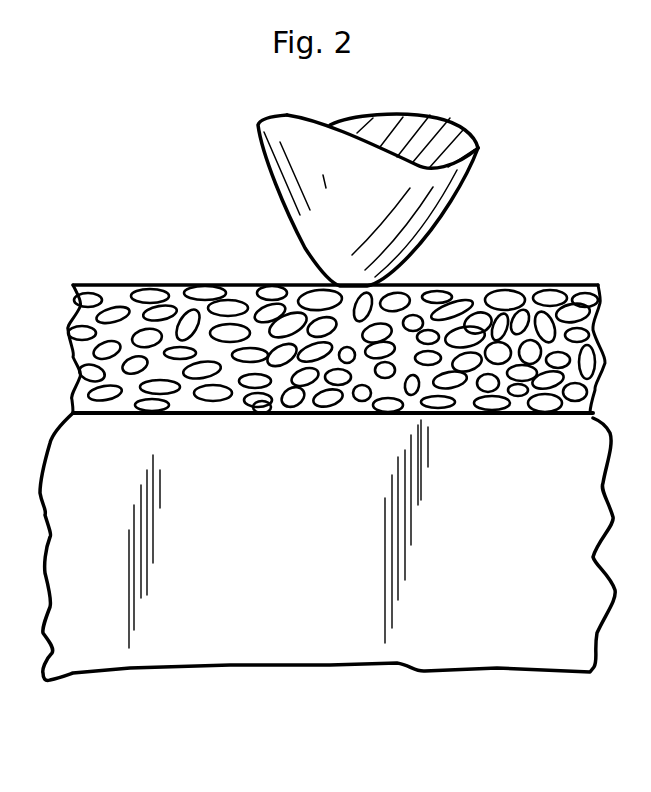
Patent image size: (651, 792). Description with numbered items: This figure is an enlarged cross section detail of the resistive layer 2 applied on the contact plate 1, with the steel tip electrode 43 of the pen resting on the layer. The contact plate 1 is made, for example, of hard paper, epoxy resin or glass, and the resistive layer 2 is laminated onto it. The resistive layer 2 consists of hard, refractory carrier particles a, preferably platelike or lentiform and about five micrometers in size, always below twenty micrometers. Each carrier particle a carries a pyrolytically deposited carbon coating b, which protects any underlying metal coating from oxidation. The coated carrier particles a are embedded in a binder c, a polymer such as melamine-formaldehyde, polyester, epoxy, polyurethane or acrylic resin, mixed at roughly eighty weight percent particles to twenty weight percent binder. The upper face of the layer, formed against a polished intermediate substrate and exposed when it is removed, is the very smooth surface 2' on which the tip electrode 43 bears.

The contact plate 1 is at (318, 647).
The resistive layer 2 is at (315, 349).
The smooth surface of the resistive layer 2' is at (335, 255).
The tip electrode 43 is at (292, 160).
The carrier particles a is at (543, 270).
The carbon coating b is at (505, 298).
The binder c is at (130, 403).